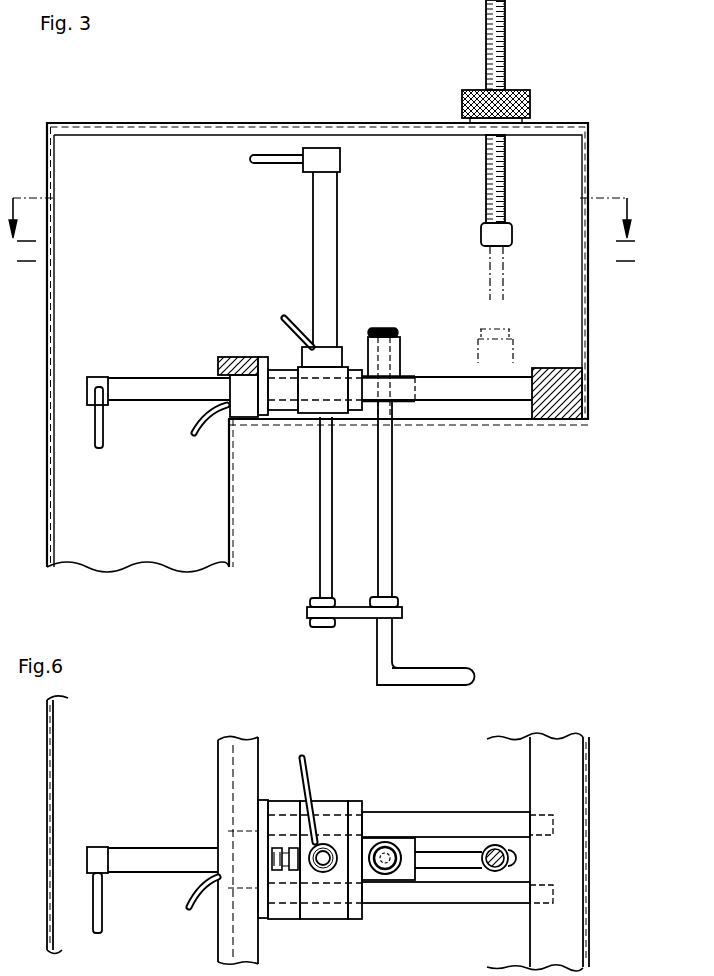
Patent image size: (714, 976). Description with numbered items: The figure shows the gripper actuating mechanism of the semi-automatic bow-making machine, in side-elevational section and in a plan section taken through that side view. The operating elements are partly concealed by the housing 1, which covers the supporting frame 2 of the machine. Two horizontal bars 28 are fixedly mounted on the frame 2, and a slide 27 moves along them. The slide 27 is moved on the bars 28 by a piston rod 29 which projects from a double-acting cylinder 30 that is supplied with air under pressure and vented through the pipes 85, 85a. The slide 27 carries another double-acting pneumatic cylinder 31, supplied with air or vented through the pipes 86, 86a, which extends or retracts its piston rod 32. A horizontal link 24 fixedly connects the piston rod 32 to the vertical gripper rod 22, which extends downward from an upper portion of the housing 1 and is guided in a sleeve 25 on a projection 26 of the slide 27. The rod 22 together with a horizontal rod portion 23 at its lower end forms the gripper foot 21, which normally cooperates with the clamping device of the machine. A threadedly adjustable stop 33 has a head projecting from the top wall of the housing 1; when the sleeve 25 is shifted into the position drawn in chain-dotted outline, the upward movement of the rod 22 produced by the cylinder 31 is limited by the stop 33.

In FIG. 3, the housing 1 is at (47, 315).
In FIG. 6, the housing 1 is at (47, 782).
In FIG. 3, the supporting frame 2 is at (236, 358).
In FIG. 6, the supporting frame 2 is at (228, 785).
In FIG. 3, the gripper foot 21 is at (398, 662).
In FIG. 3, the vertical gripper rod 22 is at (393, 523).
In FIG. 3, the horizontal rod portion 23 is at (428, 683).
In FIG. 3, the horizontal link 24 is at (357, 613).
In FIG. 3, the sleeve 25 is at (398, 367).
In FIG. 6, the sleeve 25 is at (385, 881).
In FIG. 3, the projection 26 is at (398, 405).
In FIG. 6, the projection 26 is at (369, 849).
In FIG. 3, the slide 27 is at (318, 407).
In FIG. 6, the slide 27 is at (323, 913).
In FIG. 3, the horizontal bars 28 is at (467, 392).
In FIG. 6, the horizontal bars 28 is at (456, 823).
In FIG. 6, the piston rod 29 is at (285, 846).
In FIG. 3, the double-acting cylinder 30 is at (150, 389).
In FIG. 6, the double-acting cylinder 30 is at (160, 863).
In FIG. 3, the double-acting pneumatic cylinder 31 is at (328, 251).
In FIG. 6, the double-acting pneumatic cylinder 31 is at (313, 873).
In FIG. 3, the piston rod 32 is at (320, 523).
In FIG. 3, the threadedly adjustable stop 33 is at (493, 51).
In FIG. 6, the threadedly adjustable stop 33 is at (495, 845).
In FIG. 3, the pipe 85 is at (99, 431).
In FIG. 6, the pipe 85 is at (100, 913).
In FIG. 3, the pipe 85a is at (207, 434).
In FIG. 6, the pipe 85a is at (195, 909).
In FIG. 3, the pipe 86 is at (287, 317).
In FIG. 6, the pipe 86 is at (307, 784).
In FIG. 3, the pipe 86a is at (268, 163).